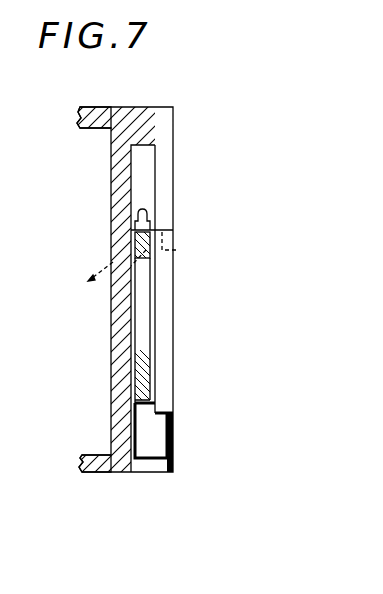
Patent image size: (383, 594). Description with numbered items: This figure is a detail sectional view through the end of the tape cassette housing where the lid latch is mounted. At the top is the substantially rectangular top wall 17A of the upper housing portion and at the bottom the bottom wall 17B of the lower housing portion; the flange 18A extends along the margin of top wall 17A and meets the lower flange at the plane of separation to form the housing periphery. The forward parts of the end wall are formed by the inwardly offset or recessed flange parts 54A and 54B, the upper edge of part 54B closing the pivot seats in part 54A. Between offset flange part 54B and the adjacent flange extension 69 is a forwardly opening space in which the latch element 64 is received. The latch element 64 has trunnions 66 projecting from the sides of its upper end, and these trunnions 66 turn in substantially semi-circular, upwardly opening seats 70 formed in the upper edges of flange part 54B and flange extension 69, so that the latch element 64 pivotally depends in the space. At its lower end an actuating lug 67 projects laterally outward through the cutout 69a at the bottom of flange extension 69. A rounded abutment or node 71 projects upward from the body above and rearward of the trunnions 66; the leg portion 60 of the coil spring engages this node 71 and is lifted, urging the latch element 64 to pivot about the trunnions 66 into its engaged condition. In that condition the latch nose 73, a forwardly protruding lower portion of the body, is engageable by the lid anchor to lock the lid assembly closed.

The top wall 17A is at (105, 106).
The bottom wall 17B is at (104, 474).
The flange 18A is at (163, 128).
The recessed flange part 54A is at (122, 159).
The recessed flange part 54B is at (126, 386).
The leg portion 60 is at (136, 212).
The latch element 64 is at (134, 332).
The trunnions 66 is at (84, 282).
The actuating lug 67 is at (162, 450).
The flange extension 69 is at (173, 310).
The cutout 69a is at (173, 410).
The seats 70 is at (180, 251).
The node 71 is at (135, 236).
The latch nose 73 is at (112, 396).